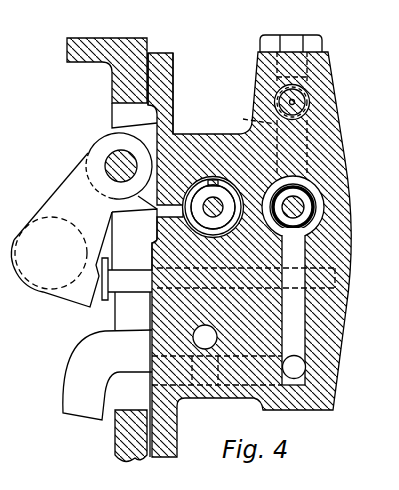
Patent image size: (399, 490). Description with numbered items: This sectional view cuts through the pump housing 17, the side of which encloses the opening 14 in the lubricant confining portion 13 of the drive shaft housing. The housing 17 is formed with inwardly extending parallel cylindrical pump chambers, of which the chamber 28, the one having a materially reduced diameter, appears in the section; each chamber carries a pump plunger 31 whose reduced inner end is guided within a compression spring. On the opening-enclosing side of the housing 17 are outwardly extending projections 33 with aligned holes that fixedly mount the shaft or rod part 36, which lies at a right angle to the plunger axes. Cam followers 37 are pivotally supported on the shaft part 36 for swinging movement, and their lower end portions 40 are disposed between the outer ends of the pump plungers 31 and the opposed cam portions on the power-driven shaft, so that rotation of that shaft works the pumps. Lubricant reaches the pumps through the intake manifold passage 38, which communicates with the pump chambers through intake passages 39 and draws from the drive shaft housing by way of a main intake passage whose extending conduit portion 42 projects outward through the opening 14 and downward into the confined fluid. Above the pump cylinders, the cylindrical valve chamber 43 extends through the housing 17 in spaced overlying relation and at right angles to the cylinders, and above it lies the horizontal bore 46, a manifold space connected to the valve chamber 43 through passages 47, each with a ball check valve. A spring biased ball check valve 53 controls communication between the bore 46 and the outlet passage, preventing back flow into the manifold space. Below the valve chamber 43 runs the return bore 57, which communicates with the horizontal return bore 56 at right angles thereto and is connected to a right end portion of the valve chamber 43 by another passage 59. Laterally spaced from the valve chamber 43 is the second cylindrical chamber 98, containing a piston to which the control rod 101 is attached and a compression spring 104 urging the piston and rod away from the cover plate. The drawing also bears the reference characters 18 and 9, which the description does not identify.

The lubricant confining portion 13 is at (110, 39).
The opening 14 is at (123, 110).
The pump housing 17 is at (336, 100).
The wall block 18 is at (160, 53).
The cylindrical chamber 28 is at (153, 298).
The pump plunger 31 is at (130, 268).
The projections 33 is at (105, 137).
The shaft or rod part 36 is at (115, 182).
The cam followers 37 is at (62, 186).
The intake manifold passage 38 is at (193, 336).
The intake passages 39 is at (218, 303).
The lower end portions 40 is at (20, 237).
The extending conduit portion 42 is at (72, 363).
The cylindrical valve chamber 43 is at (325, 194).
The horizontal bore 46 is at (312, 96).
The passages 47 is at (249, 120).
The spring biased ball check valve 53 is at (272, 100).
The horizontal bore 56 is at (250, 394).
The bore 57 is at (307, 363).
The passage 59 is at (303, 313).
The second cylindrical chamber 98 is at (195, 179).
The control rod 101 is at (210, 216).
The compression spring 104 is at (232, 191).
The partially visible numeral 9 is at (1, 300).